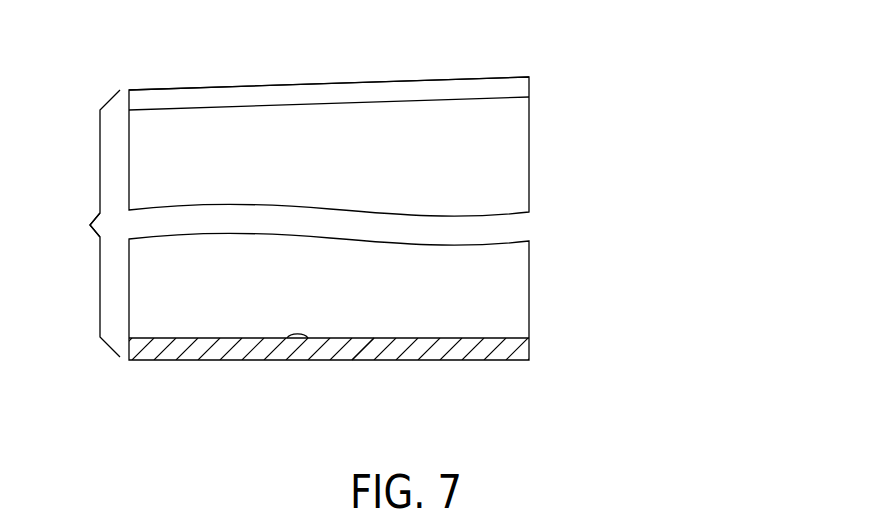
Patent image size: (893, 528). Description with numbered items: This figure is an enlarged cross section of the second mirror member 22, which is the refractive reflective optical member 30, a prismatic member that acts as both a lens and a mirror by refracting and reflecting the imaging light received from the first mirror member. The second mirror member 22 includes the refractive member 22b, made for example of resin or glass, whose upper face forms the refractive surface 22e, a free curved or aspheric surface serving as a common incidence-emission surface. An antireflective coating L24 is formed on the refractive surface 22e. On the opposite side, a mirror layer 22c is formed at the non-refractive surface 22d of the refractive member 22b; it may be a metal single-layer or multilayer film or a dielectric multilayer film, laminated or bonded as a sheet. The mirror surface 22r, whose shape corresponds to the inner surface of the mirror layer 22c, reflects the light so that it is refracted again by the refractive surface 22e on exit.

The second mirror member 22 is at (91, 223).
The refractive reflective optical member 30 is at (77, 235).
The refractive member 22b is at (513, 163).
The refractive surface 22e is at (414, 79).
The antireflective coating L24 is at (245, 95).
The mirror layer 22c is at (513, 350).
The mirror surface 22r is at (287, 339).
The non-refractive surface 22d is at (358, 340).